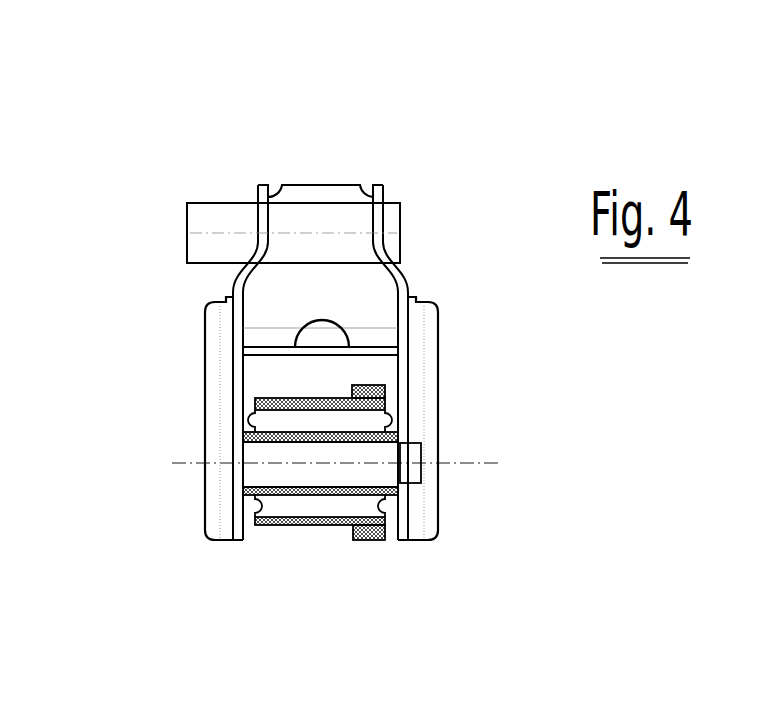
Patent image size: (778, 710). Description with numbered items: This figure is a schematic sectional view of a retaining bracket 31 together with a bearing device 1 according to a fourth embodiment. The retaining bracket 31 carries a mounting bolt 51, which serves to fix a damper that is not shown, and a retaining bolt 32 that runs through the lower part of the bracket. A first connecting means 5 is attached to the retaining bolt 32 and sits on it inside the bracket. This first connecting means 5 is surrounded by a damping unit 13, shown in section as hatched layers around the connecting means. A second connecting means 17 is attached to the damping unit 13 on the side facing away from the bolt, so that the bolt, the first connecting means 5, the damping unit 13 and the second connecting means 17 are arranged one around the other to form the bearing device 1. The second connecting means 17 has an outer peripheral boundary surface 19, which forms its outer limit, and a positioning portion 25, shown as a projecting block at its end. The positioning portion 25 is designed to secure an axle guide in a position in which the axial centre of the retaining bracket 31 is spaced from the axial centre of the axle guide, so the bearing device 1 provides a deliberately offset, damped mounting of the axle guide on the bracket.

The bearing device 1 is at (273, 556).
The first connecting means 5 is at (400, 432).
The damping unit 13 is at (268, 419).
The second connecting means 17 is at (318, 522).
The outer peripheral boundary surface 19 is at (288, 388).
The positioning portion 25 is at (370, 557).
The retaining bracket 31 is at (405, 275).
The retaining bolt 32 is at (250, 477).
The mounting bolt 51 is at (210, 202).